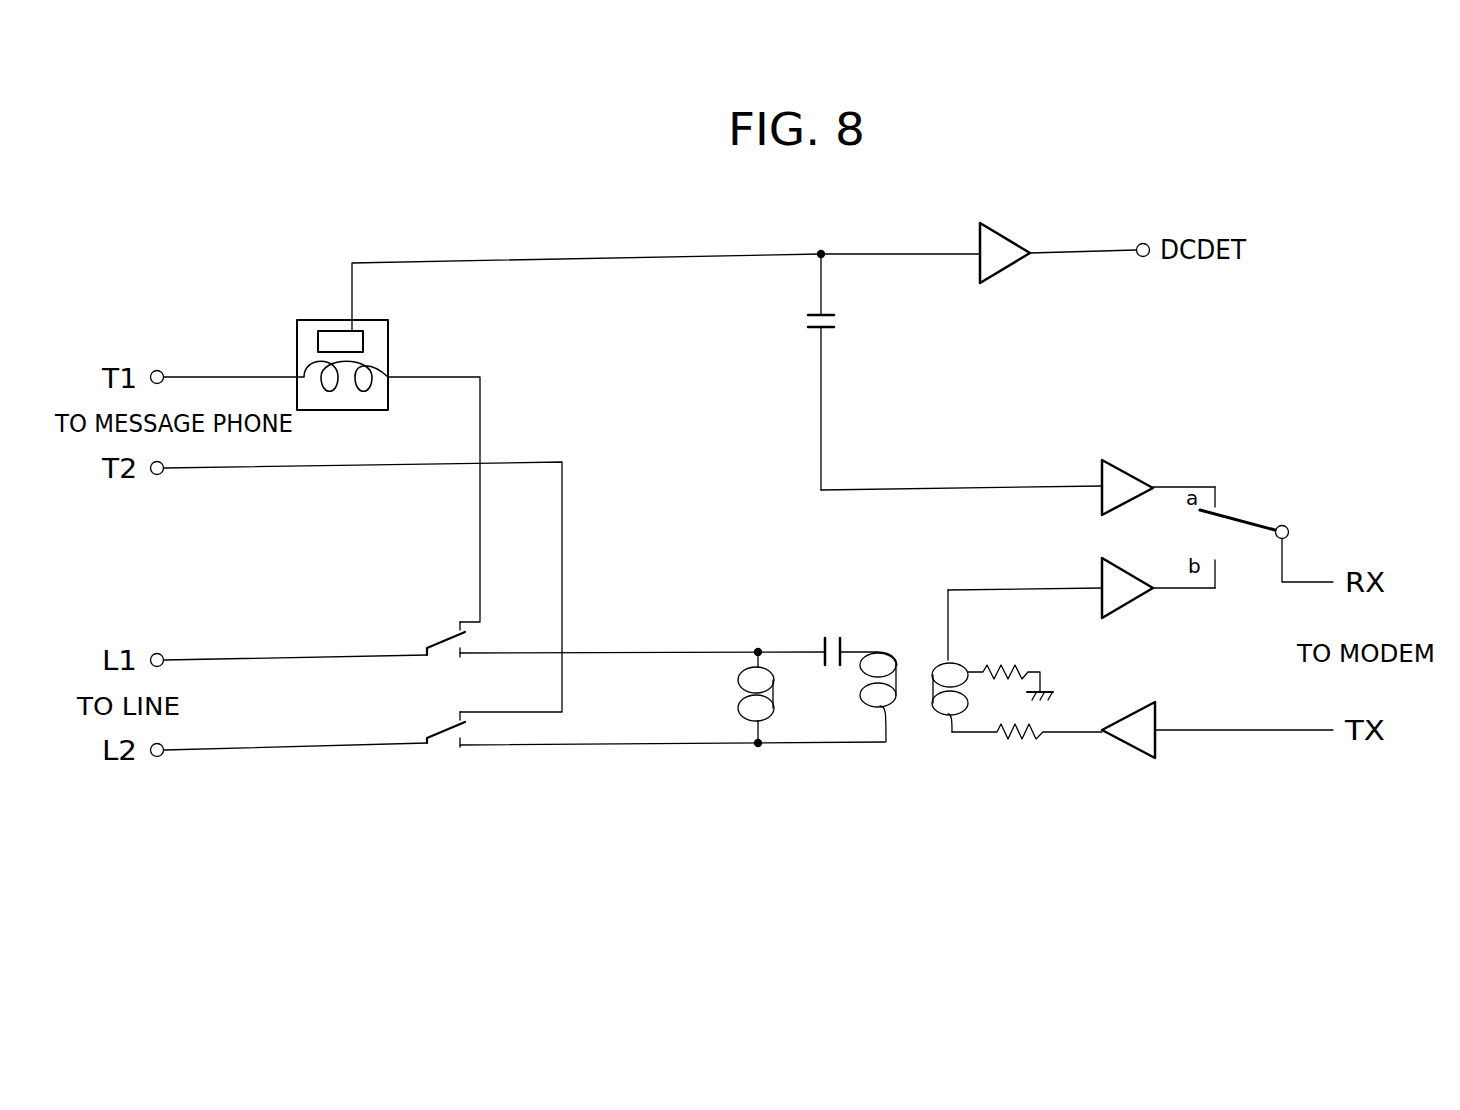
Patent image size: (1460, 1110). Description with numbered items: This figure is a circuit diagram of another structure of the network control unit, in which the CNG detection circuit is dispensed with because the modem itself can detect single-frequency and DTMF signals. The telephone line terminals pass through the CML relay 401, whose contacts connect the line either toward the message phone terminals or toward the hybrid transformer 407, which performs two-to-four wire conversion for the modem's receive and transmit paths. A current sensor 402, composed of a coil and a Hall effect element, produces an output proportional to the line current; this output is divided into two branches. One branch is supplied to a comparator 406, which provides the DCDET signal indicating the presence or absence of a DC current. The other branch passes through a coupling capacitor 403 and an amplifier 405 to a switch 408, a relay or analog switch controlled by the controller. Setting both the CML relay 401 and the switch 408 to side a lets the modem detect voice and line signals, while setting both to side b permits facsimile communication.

The CML relay 401 is at (432, 642).
The current sensor 402 is at (325, 318).
The coupling capacitor 403 is at (840, 322).
The amplifier 405 is at (1125, 460).
The comparator 406 is at (1013, 238).
The hybrid transformer 407 is at (917, 723).
The switch 408 is at (1258, 518).